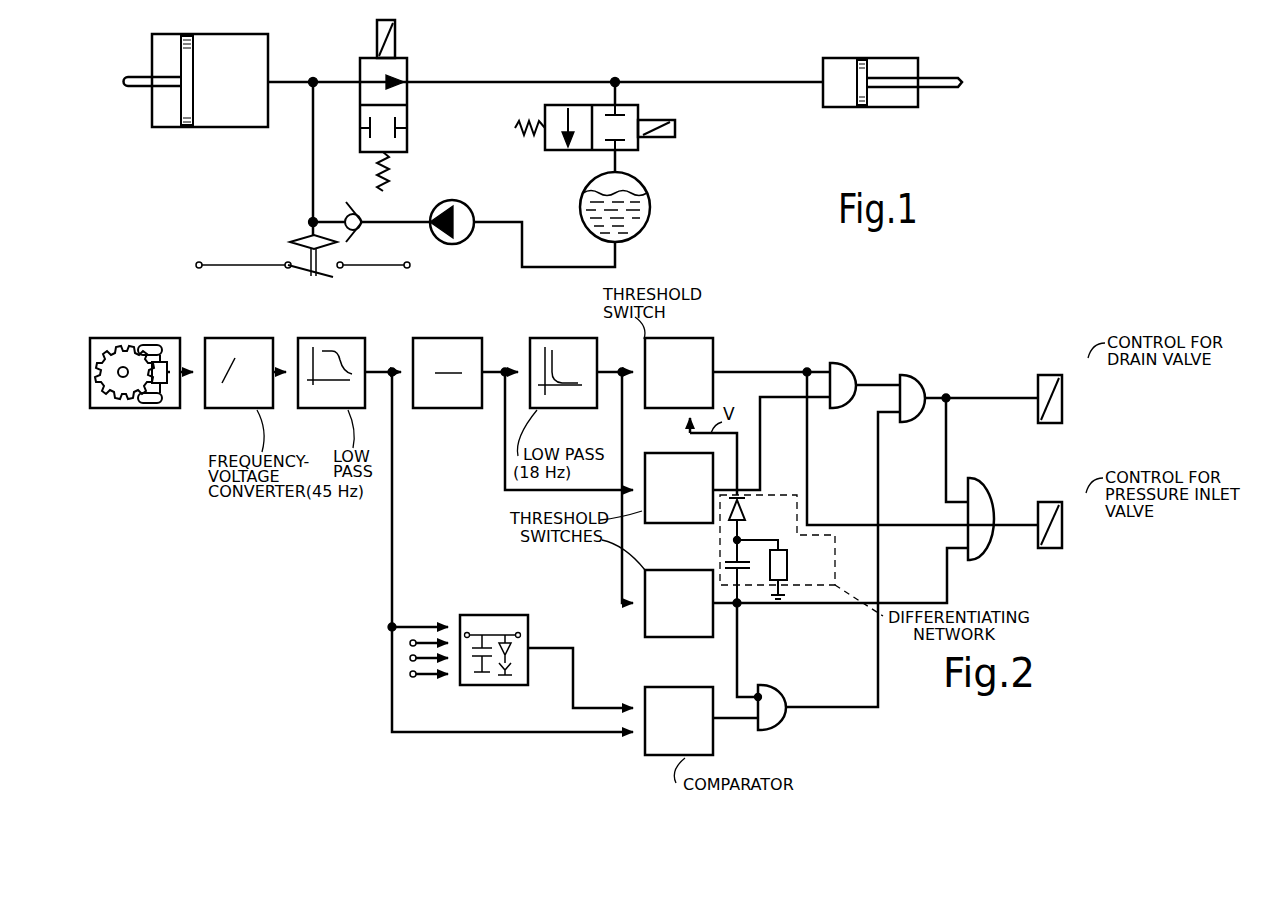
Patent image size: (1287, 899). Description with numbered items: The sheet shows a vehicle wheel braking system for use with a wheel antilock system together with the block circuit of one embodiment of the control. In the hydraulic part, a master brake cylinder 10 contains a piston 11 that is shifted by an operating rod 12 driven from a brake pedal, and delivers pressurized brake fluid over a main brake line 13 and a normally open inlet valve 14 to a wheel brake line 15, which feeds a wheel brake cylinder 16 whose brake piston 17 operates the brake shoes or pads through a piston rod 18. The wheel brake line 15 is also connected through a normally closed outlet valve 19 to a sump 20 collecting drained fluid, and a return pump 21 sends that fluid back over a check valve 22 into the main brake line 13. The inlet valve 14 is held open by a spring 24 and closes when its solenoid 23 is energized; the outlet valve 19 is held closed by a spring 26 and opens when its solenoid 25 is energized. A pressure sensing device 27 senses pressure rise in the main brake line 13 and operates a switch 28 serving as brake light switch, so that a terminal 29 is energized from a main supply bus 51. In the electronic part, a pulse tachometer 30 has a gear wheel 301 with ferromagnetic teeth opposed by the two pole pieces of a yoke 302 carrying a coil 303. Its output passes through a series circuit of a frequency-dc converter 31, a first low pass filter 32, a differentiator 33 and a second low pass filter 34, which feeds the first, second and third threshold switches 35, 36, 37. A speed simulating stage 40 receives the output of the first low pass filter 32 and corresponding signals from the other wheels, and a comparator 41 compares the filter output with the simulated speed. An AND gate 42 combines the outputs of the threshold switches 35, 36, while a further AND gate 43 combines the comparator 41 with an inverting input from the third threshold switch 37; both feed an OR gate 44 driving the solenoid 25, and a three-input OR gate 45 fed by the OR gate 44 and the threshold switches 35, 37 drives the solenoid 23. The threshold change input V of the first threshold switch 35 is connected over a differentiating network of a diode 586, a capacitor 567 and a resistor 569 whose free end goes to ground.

In FIG. 1, the master brake cylinder 10 is at (227, 118).
In FIG. 1, the piston 11 is at (188, 72).
In FIG. 1, the operating rod 12 is at (140, 88).
In FIG. 1, the main brake line 13 is at (292, 80).
In FIG. 1, the inlet valve 14 is at (403, 70).
In FIG. 1, the wheel brake line 15 is at (552, 80).
In FIG. 1, the wheel brake cylinder 16 is at (840, 68).
In FIG. 1, the brake piston 17 is at (855, 92).
In FIG. 1, the piston rod 18 is at (940, 86).
In FIG. 1, the outlet valve 19 is at (630, 152).
In FIG. 1, the sump 20 is at (648, 205).
In FIG. 1, the return pump 21 is at (462, 203).
In FIG. 1, the check valve 22 is at (365, 208).
In FIG. 1, the solenoid 23 is at (393, 30).
In FIG. 2, the solenoid 23 is at (1052, 508).
In FIG. 1, the spring 24 is at (390, 178).
In FIG. 1, the solenoid 25 is at (676, 128).
In FIG. 2, the solenoid 25 is at (1052, 378).
In FIG. 1, the spring 26 is at (518, 132).
In FIG. 1, the pressure sensing device 27 is at (300, 240).
In FIG. 1, the switch 28 is at (306, 273).
In FIG. 1, the terminal 29 is at (405, 269).
In FIG. 1, the main supply bus 51 is at (240, 263).
In FIG. 2, the pulse tachometer 30 is at (116, 408).
In FIG. 2, the gear wheel 301 is at (112, 352).
In FIG. 2, the yoke 302 is at (155, 350).
In FIG. 2, the coil 303 is at (160, 384).
In FIG. 2, the frequency-dc converter 31 is at (237, 410).
In FIG. 2, the first low pass filter 32 is at (333, 410).
In FIG. 2, the differentiator 33 is at (449, 410).
In FIG. 2, the second low pass filter 34 is at (565, 410).
In FIG. 2, the first threshold switch 35 is at (668, 410).
In FIG. 2, the second threshold switch 36 is at (672, 524).
In FIG. 2, the third threshold switch 37 is at (648, 623).
In FIG. 2, the speed simulating stage 40 is at (490, 615).
In FIG. 2, the comparator 41 is at (713, 745).
In FIG. 2, the AND gate 42 is at (847, 373).
In FIG. 2, the AND gate 43 is at (774, 700).
In FIG. 2, the OR gate 44 is at (913, 388).
In FIG. 2, the OR gate 45 is at (977, 484).
In FIG. 2, the diode 586 is at (746, 508).
In FIG. 2, the resistor 569 is at (787, 565).
In FIG. 2, the capacitor 567 is at (747, 572).